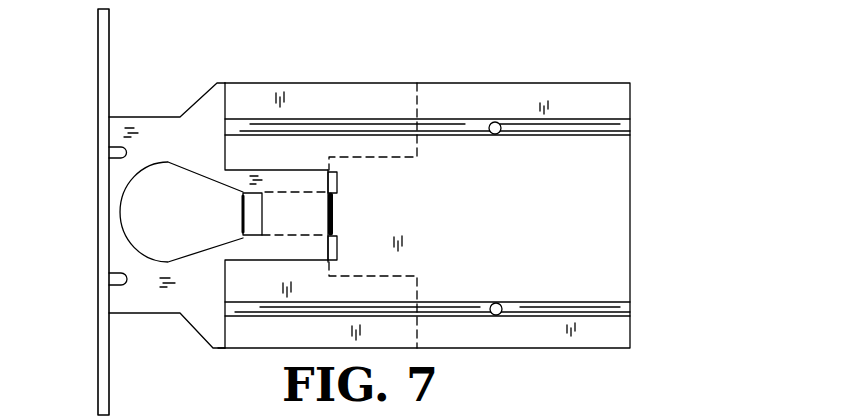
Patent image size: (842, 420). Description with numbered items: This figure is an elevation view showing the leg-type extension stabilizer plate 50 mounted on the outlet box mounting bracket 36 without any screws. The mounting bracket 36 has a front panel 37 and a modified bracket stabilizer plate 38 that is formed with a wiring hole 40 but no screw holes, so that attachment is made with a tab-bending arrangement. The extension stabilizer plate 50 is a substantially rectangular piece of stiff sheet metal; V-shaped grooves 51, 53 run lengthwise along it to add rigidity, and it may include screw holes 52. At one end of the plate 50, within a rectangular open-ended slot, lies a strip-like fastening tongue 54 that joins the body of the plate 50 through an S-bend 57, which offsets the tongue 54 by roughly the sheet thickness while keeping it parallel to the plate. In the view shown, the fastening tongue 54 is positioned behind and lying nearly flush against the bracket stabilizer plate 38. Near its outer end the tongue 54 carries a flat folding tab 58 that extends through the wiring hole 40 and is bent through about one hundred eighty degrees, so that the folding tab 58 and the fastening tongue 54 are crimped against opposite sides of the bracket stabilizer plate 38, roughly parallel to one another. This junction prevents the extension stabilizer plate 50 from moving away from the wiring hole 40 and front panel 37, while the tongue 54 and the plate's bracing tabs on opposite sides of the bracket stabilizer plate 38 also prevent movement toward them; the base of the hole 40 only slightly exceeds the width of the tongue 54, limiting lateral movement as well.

The outlet box mounting bracket 36 is at (97, 220).
The front panel 37 is at (98, 340).
The bracket stabilizer plate 38 is at (208, 100).
The wiring hole 40 is at (170, 180).
The leg-type extension stabilizer plate 50 is at (509, 80).
The V-shaped groove 51 is at (588, 132).
The screw holes 52 is at (491, 136).
The V-shaped groove 53 is at (571, 307).
The fastening tongue 54 is at (305, 205).
The S-bend 57 is at (340, 206).
The folding tab 58 is at (251, 207).